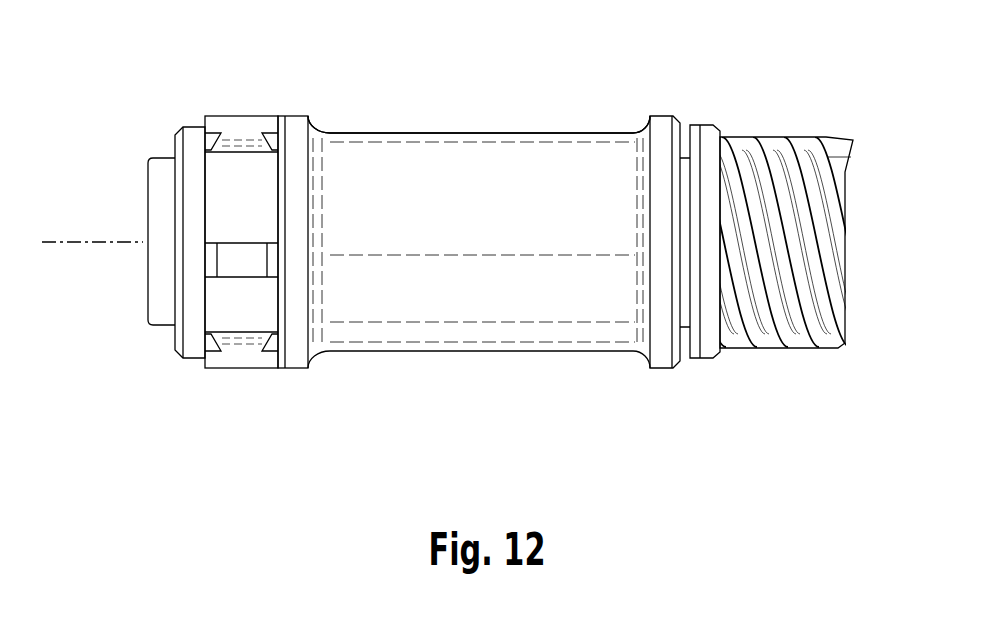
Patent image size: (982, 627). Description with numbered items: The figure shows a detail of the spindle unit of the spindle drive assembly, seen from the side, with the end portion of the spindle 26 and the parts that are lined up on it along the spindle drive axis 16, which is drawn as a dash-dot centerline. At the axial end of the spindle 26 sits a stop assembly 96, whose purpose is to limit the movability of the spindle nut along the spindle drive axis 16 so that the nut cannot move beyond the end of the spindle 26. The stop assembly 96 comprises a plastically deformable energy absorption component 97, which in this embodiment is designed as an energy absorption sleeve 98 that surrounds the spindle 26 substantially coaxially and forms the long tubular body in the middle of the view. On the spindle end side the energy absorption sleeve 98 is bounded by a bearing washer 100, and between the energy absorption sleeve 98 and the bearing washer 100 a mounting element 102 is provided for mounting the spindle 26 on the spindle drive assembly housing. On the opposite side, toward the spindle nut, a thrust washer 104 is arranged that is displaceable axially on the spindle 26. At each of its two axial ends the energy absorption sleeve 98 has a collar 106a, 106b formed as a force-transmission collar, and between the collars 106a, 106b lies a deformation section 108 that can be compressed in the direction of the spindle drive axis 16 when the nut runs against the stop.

The spindle drive axis 16 is at (98, 238).
The spindle 26 is at (753, 307).
The stop assembly 96 is at (479, 302).
The energy absorption component 97 is at (395, 307).
The energy absorption sleeve 98 is at (497, 380).
The bearing washer 100 is at (193, 128).
The mounting element 102 is at (242, 128).
The thrust washer 104 is at (698, 128).
The collar 106a is at (302, 128).
The collar 106b is at (655, 128).
The deformation section 108 is at (498, 114).